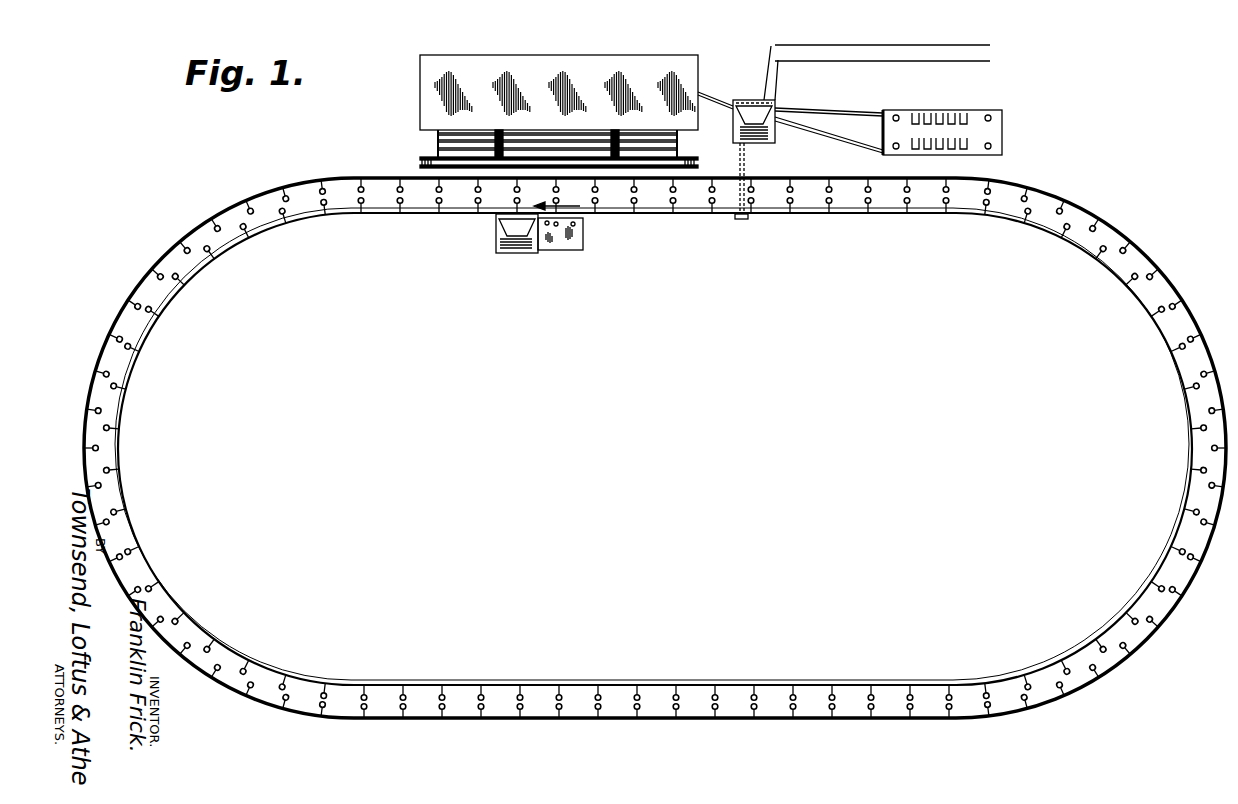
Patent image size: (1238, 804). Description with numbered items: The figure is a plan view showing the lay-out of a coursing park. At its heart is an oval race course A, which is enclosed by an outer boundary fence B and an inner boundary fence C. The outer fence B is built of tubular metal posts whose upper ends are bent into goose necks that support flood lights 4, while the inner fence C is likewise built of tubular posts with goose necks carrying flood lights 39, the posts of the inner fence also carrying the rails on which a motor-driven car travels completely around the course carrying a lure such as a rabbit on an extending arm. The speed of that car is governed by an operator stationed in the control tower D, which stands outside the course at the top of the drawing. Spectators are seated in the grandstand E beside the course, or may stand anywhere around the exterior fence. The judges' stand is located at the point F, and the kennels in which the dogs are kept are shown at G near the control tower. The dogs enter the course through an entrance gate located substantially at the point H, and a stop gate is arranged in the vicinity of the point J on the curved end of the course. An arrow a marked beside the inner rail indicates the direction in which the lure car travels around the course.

The race course A is at (231, 235).
The outer boundary fence B is at (360, 180).
The inner boundary fence C is at (330, 224).
The control tower D is at (772, 91).
The grandstand E is at (610, 70).
The judges' stand F is at (505, 255).
The kennels G is at (950, 128).
The entrance gate H is at (822, 156).
The stop gate J is at (146, 291).
The direction of travel a is at (566, 205).
The flood lights 4 is at (102, 378).
The flood lights 39 is at (139, 345).